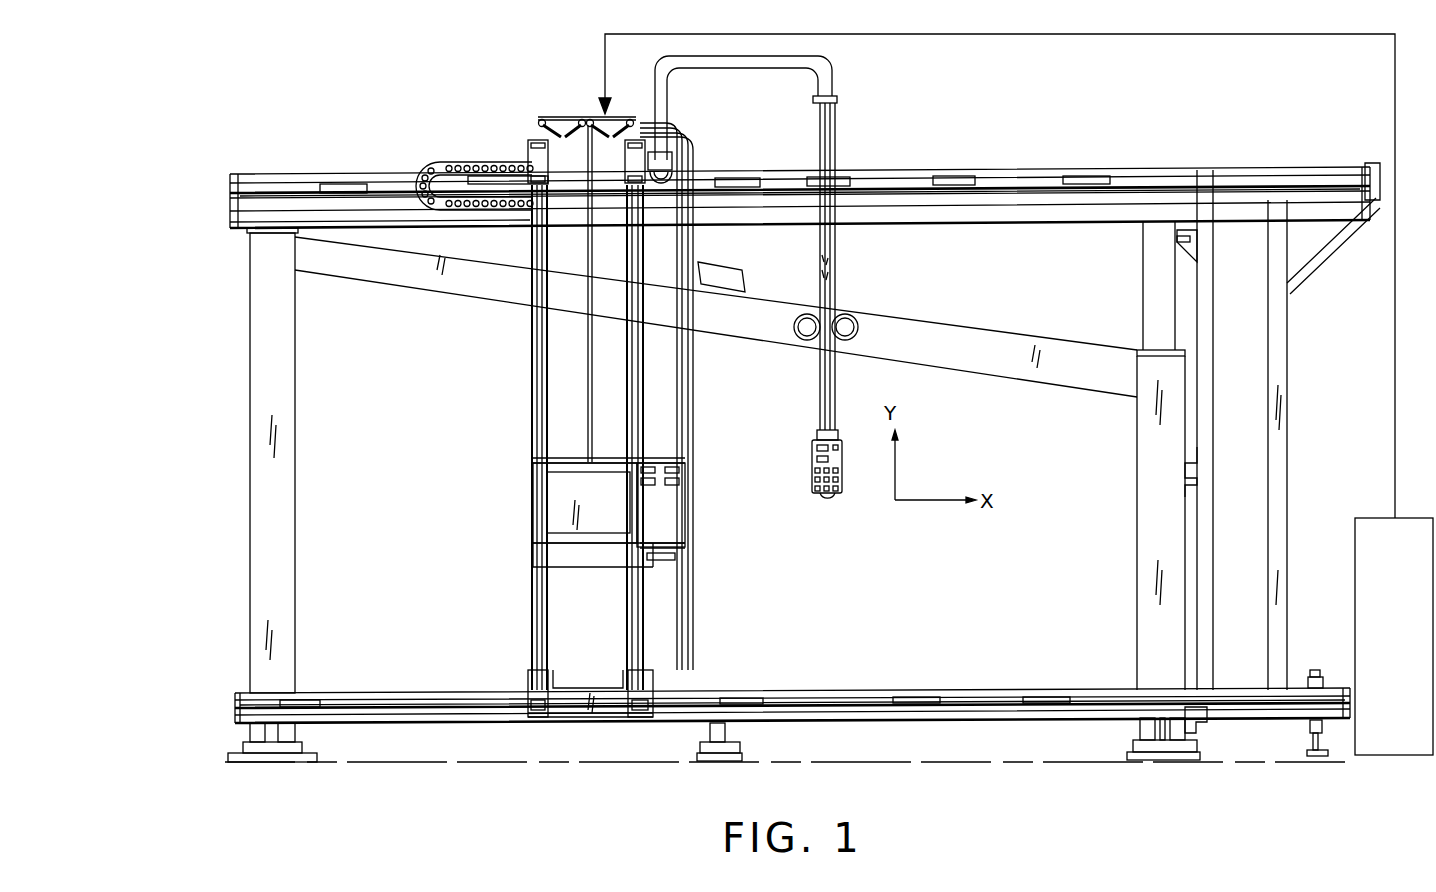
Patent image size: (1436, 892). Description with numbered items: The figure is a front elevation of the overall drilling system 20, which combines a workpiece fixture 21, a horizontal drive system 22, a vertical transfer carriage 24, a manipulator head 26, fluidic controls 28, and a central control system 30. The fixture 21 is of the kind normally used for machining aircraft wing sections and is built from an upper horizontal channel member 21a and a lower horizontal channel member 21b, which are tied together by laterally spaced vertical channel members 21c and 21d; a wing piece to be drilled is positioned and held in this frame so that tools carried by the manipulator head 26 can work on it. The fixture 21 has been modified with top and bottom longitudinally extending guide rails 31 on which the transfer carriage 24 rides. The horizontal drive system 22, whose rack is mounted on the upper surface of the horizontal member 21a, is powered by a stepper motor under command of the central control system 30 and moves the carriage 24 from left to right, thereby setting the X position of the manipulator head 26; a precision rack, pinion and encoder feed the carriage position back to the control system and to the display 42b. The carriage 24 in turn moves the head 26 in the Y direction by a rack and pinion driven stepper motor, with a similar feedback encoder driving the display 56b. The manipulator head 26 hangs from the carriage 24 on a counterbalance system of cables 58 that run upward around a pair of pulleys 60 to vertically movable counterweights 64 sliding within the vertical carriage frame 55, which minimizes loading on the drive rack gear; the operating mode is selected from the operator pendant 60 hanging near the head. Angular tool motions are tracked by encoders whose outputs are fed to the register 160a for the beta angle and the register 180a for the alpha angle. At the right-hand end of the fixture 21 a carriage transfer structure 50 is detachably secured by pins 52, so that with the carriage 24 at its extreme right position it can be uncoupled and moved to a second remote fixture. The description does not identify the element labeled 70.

The drilling system 20 is at (1328, 121).
The workpiece fixture 21 is at (1138, 268).
The horizontal channel member 21a is at (955, 223).
The horizontal channel member 21b is at (962, 716).
The vertical channel member 21c is at (250, 406).
The vertical channel member 21d is at (1137, 513).
The horizontal drive system 22 is at (628, 104).
The vertical transfer carriage 24 is at (673, 396).
The manipulator head 26 is at (535, 506).
The fluidic controls 28 is at (701, 486).
The central control system 30 is at (1405, 517).
The guide rails 31 is at (1162, 190).
The display 42b is at (650, 467).
The carriage transfer structure 50 is at (1288, 372).
The pins 52 is at (1190, 240).
The vertical carriage frame 55 is at (533, 378).
The display 56b is at (680, 470).
The cables 58 is at (588, 343).
The pulleys / operator pendant 60 is at (578, 121).
The counterweights 64 is at (528, 158).
The cable bundle 70 is at (697, 628).
The register 160a is at (651, 487).
The register 180a is at (680, 483).